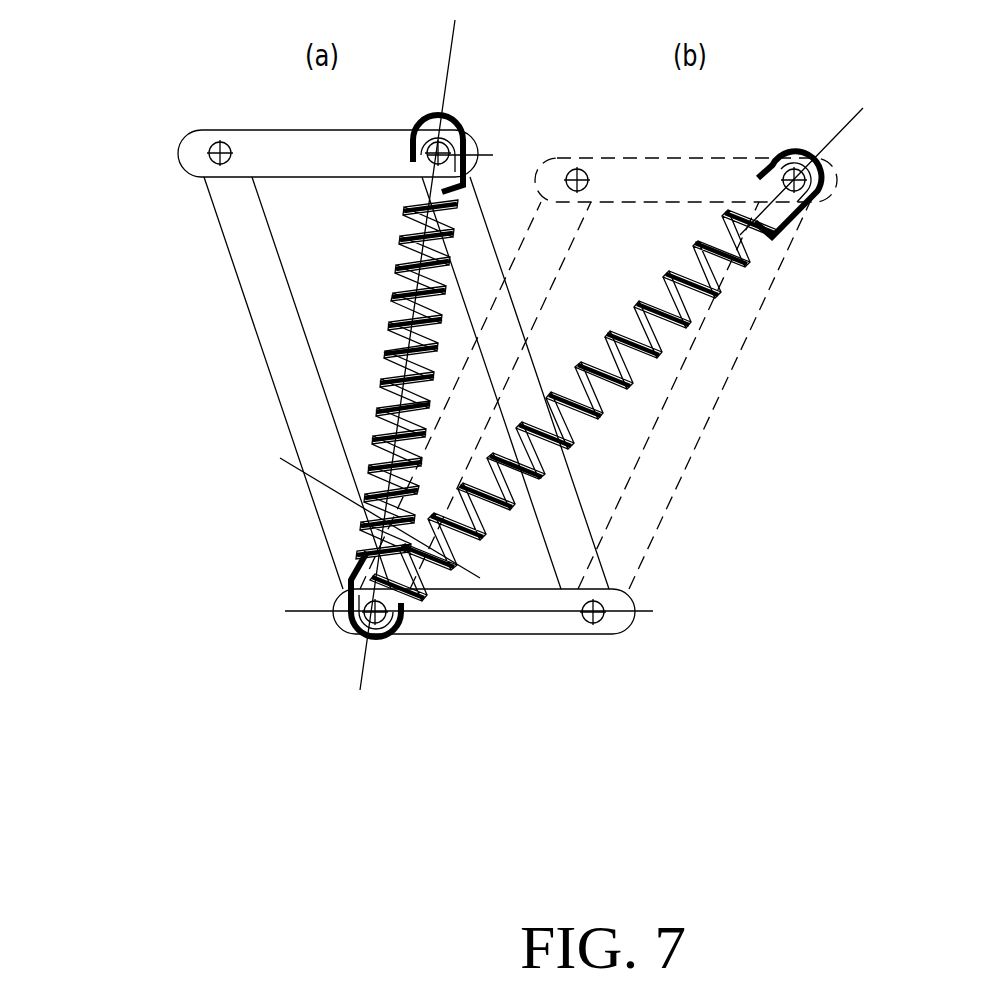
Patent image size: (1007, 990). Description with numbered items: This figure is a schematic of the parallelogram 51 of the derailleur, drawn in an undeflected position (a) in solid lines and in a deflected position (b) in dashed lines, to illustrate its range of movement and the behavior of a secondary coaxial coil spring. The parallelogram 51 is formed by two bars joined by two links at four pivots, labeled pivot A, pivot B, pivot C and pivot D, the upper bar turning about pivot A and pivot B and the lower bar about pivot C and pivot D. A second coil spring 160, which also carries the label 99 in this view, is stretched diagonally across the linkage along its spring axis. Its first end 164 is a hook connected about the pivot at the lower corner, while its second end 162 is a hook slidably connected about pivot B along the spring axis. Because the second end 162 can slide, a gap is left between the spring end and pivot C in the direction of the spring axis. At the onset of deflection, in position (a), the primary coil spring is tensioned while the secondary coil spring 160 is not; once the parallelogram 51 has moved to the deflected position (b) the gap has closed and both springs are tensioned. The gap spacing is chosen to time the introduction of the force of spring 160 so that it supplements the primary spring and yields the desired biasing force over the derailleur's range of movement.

The parallelogram 51 is at (240, 452).
The coil spring 99 is at (401, 296).
The second coil spring 160 is at (398, 262).
The second end 162 is at (461, 106).
The first end 164 is at (342, 628).
The pivot point A is at (223, 144).
The pivot B is at (446, 157).
The pivot C is at (380, 638).
The pivot point D is at (598, 618).